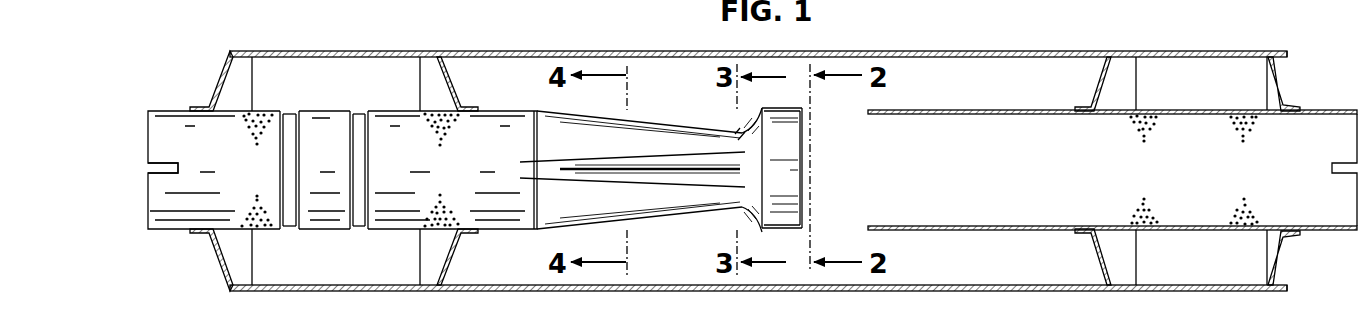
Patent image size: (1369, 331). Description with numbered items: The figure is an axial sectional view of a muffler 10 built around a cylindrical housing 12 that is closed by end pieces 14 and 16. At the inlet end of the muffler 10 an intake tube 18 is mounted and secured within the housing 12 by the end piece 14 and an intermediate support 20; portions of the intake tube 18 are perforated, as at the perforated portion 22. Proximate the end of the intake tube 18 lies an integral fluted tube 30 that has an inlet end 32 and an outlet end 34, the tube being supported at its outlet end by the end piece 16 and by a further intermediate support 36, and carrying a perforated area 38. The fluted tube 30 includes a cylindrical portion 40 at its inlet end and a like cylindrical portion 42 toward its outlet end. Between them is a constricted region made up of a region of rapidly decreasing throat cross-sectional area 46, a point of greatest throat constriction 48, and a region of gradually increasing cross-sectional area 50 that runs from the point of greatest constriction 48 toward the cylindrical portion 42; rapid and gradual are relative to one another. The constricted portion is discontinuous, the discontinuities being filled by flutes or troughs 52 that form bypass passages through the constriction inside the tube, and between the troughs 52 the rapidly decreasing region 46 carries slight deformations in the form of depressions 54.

The muffler 10 is at (760, 145).
The cylindrical housing 12 is at (1049, 50).
The end piece 14 is at (1285, 73).
The end piece 16 is at (218, 72).
The intake tube 18 is at (1326, 110).
The intermediate support 20 is at (1093, 86).
The perforated portion 22 is at (1133, 205).
The fluted tube 30 is at (505, 106).
The inlet end 32 is at (804, 127).
The outlet end 34 is at (143, 124).
The intermediate support 36 is at (460, 263).
The perforated area 38 is at (413, 118).
The cylindrical portion 40 is at (788, 153).
The cylindrical portion 42 is at (163, 214).
The region of rapidly decreasing throat cross-sectional area 46 is at (753, 127).
The point of greatest throat constriction 48 is at (736, 131).
The region of gradually increasing cross-sectional area 50 is at (660, 208).
The flutes or troughs 52 is at (667, 115).
The depressions 54 is at (735, 208).